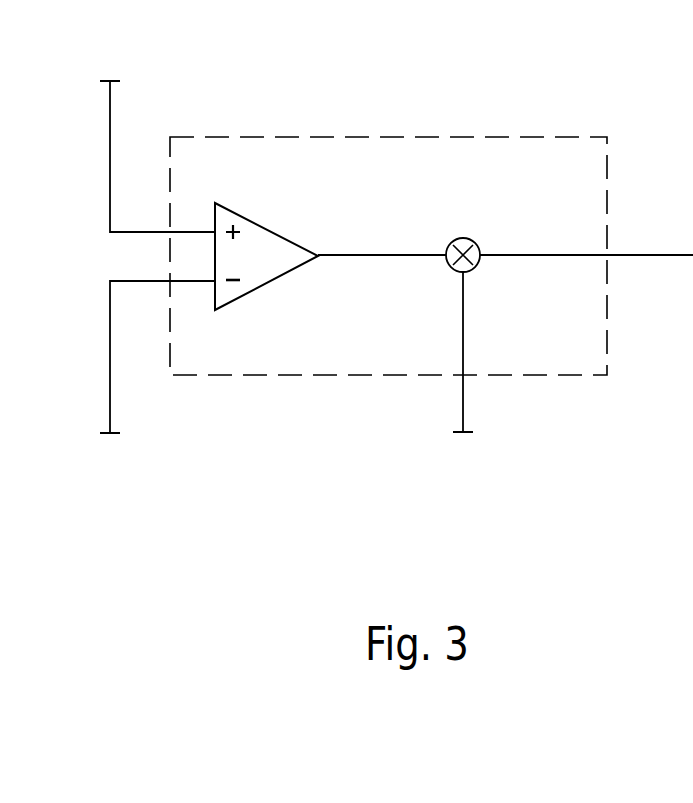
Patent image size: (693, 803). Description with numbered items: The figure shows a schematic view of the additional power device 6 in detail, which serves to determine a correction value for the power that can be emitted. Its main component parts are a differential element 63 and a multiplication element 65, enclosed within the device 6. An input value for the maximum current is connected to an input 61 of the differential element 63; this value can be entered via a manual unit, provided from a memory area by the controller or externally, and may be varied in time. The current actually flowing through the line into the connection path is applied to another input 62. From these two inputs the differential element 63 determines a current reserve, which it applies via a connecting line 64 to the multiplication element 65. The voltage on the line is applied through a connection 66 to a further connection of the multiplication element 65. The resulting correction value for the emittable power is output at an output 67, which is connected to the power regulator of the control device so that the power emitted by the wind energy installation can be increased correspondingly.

The additional power device 6 is at (428, 111).
The input 61 is at (135, 232).
The another input 62 is at (135, 281).
The differential element 63 is at (282, 243).
The connecting line 64 is at (357, 257).
The multiplication element 65 is at (463, 238).
The connection 66 is at (466, 405).
The output 67 is at (651, 258).